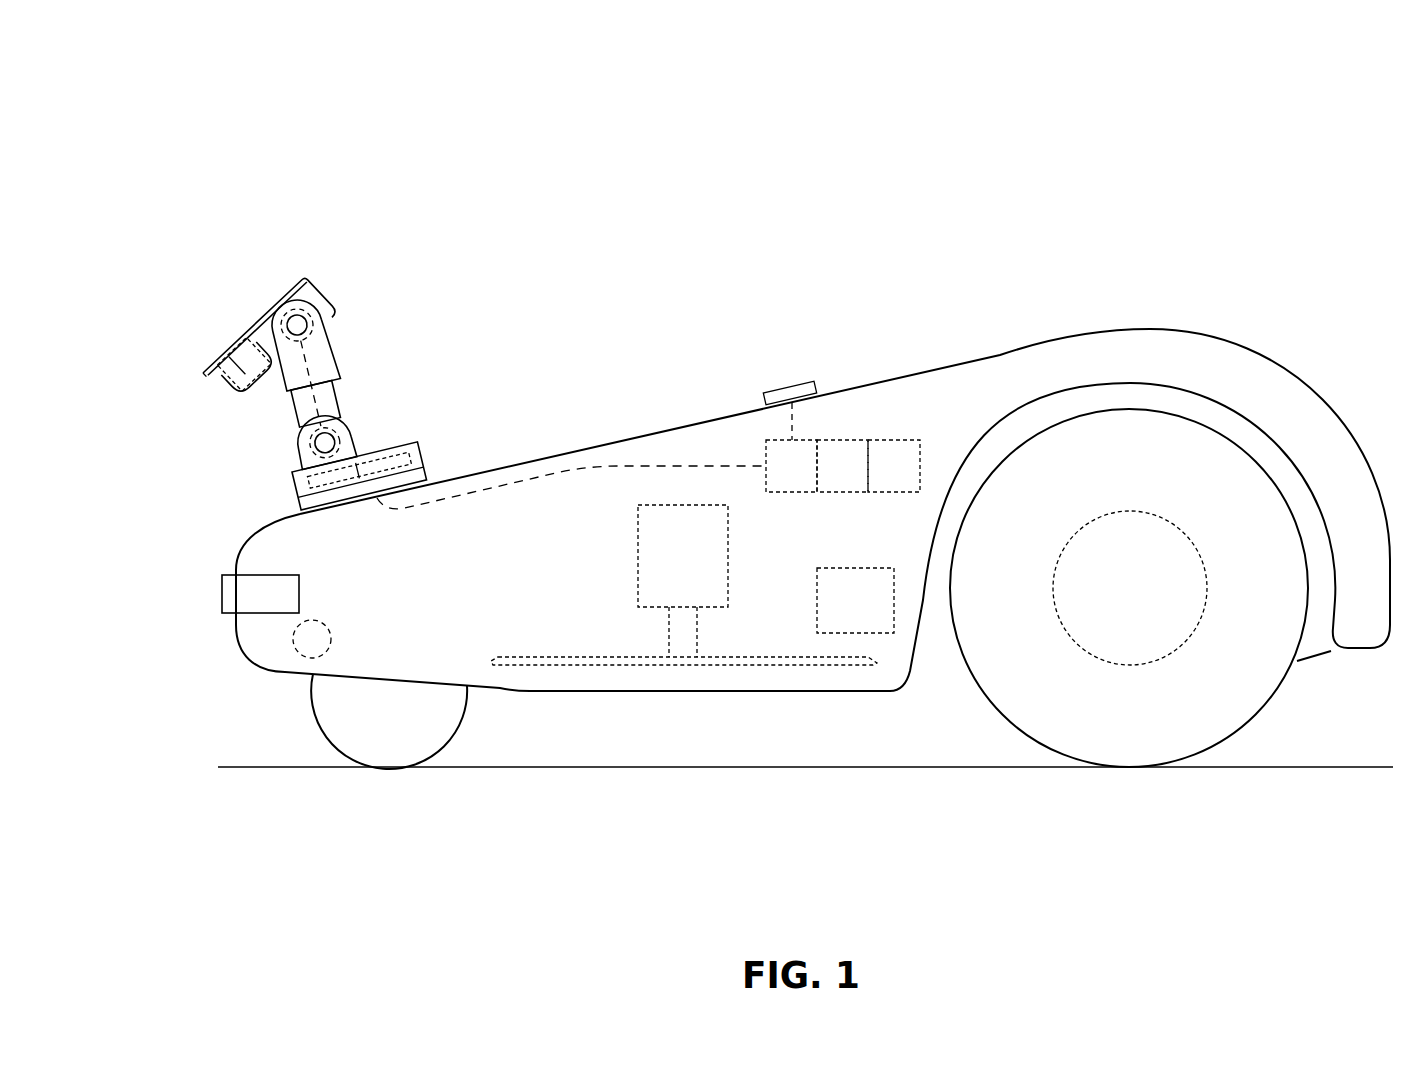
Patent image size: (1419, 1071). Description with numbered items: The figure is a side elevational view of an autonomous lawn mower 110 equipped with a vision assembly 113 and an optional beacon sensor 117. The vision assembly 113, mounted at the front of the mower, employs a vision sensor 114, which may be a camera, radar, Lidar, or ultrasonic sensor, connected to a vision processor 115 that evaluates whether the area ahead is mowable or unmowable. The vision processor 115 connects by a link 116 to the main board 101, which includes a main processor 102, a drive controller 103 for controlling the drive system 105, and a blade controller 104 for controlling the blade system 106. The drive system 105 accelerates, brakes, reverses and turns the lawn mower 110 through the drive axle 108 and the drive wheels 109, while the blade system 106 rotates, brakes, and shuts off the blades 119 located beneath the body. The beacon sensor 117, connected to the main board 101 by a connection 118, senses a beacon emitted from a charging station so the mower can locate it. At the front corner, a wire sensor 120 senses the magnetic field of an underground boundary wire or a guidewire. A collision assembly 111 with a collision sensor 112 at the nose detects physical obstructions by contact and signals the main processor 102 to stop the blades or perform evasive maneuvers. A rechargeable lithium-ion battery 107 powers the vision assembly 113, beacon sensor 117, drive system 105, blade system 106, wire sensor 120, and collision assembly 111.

The main board 101 is at (869, 465).
The main processor 102 is at (792, 492).
The drive controller 103 is at (842, 492).
The blade controller 104 is at (892, 492).
The drive system 105 is at (1312, 690).
The blade system 106 is at (596, 543).
The battery 107 is at (817, 600).
The drive axle 108 is at (1136, 512).
The drive wheels 109 is at (1278, 602).
The autonomous lawn mower 110 is at (266, 140).
The collision assembly 111 is at (221, 566).
The collision sensor 112 is at (260, 594).
The vision assembly 113 is at (298, 369).
The vision sensor 114 is at (233, 392).
The vision processor 115 is at (300, 490).
The connection cable 116 is at (668, 466).
The beacon sensor 117 is at (802, 387).
The sensor connection 118 is at (798, 420).
The blades 119 is at (545, 657).
The wire sensor 120 is at (332, 639).